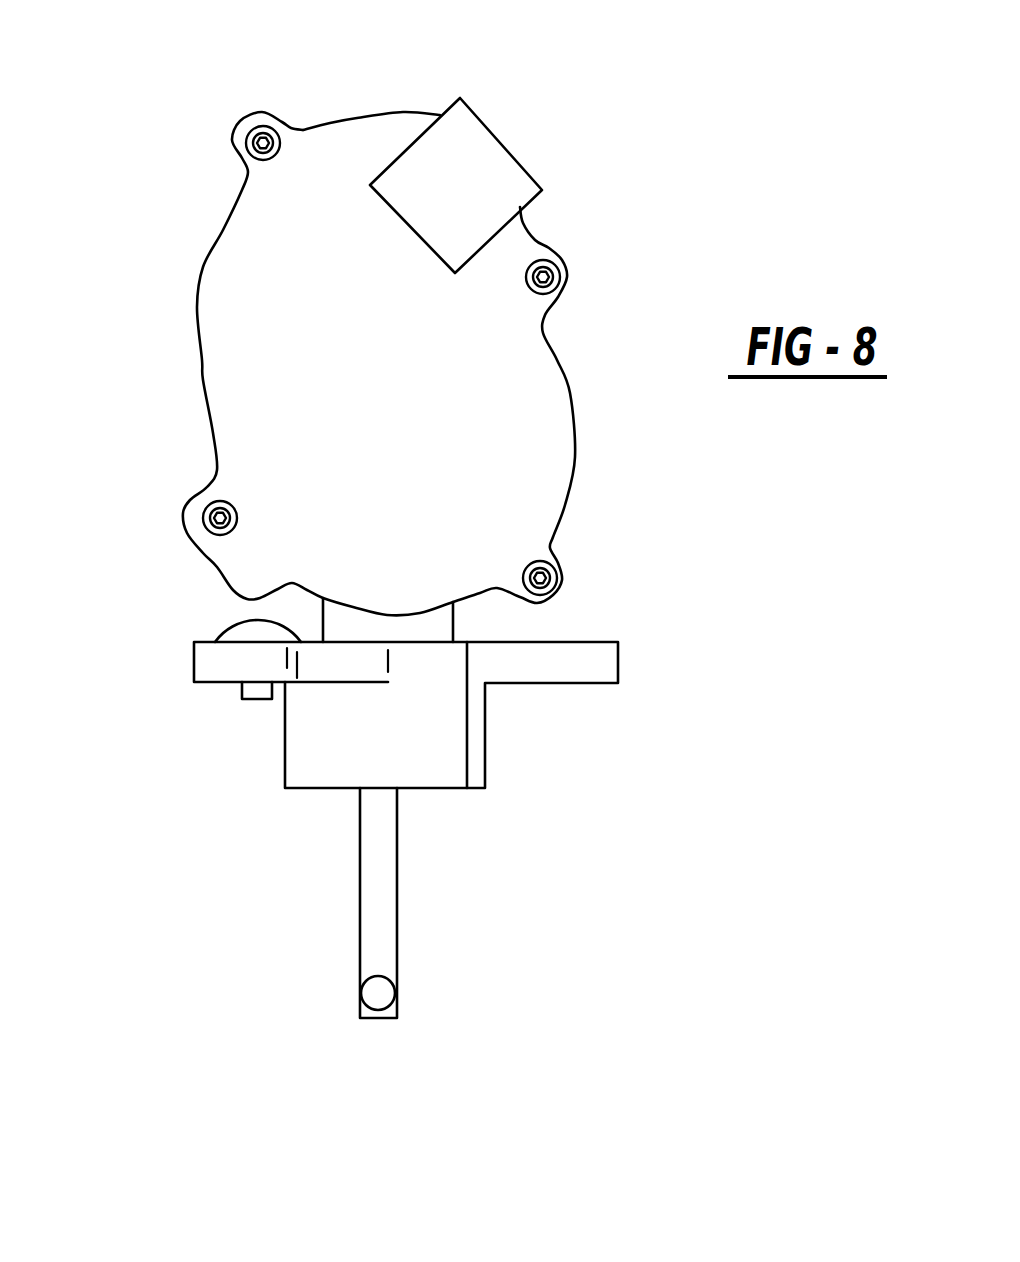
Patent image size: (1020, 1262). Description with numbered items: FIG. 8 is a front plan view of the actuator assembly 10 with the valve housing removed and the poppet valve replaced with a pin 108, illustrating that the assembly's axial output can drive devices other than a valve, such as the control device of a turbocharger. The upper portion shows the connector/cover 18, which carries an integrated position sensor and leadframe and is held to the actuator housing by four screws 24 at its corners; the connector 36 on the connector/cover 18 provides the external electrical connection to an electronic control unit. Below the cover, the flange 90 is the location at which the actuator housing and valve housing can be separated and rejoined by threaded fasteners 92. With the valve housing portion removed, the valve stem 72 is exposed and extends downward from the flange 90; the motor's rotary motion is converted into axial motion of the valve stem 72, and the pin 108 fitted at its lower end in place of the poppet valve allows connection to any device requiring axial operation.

The actuator assembly 10 is at (380, 78).
The connector/cover 18 is at (275, 342).
The screws 24 is at (262, 146).
The connector 36 is at (473, 145).
The valve stem 72 is at (385, 855).
The flange 90 is at (194, 662).
The threaded fasteners 92 is at (228, 624).
The pin 108 is at (378, 993).